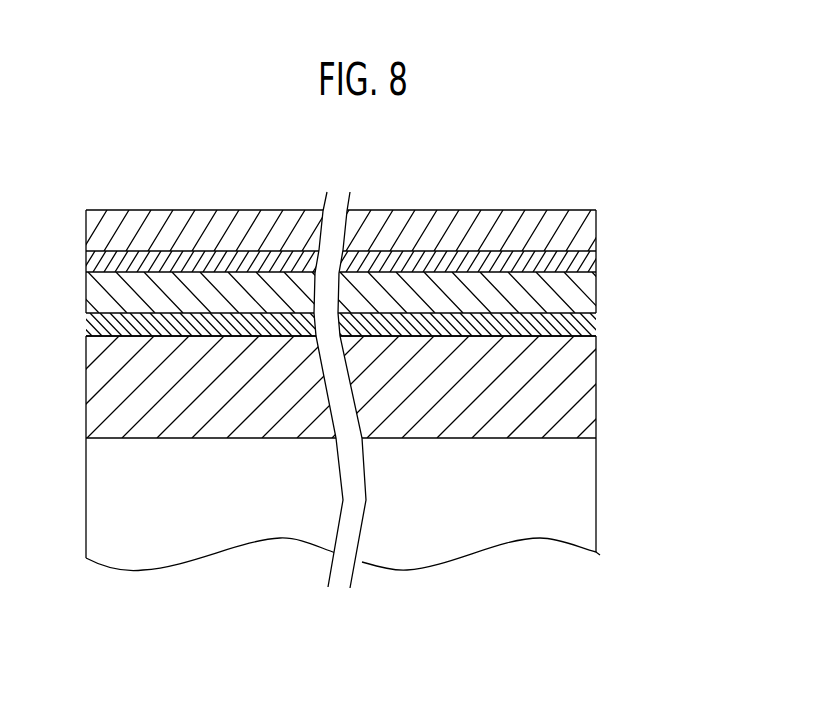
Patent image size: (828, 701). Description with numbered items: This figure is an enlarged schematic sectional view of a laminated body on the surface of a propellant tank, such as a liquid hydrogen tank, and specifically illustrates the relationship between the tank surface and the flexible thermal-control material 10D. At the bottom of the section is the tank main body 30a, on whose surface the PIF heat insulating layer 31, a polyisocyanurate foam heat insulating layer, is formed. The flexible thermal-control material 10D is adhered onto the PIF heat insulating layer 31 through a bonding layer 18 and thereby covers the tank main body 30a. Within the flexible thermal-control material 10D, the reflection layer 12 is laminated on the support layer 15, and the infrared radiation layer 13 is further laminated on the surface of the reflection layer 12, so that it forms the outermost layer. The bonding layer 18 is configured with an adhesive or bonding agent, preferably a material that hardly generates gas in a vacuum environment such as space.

The infrared radiation layer 13 is at (587, 225).
The reflection layer 12 is at (587, 260).
The support layer 15 is at (585, 295).
The bonding layer 18 is at (587, 322).
The flexible thermal-control material 10D is at (666, 215).
The PIF heat insulating layer 31 is at (585, 377).
The tank main body 30a is at (596, 492).